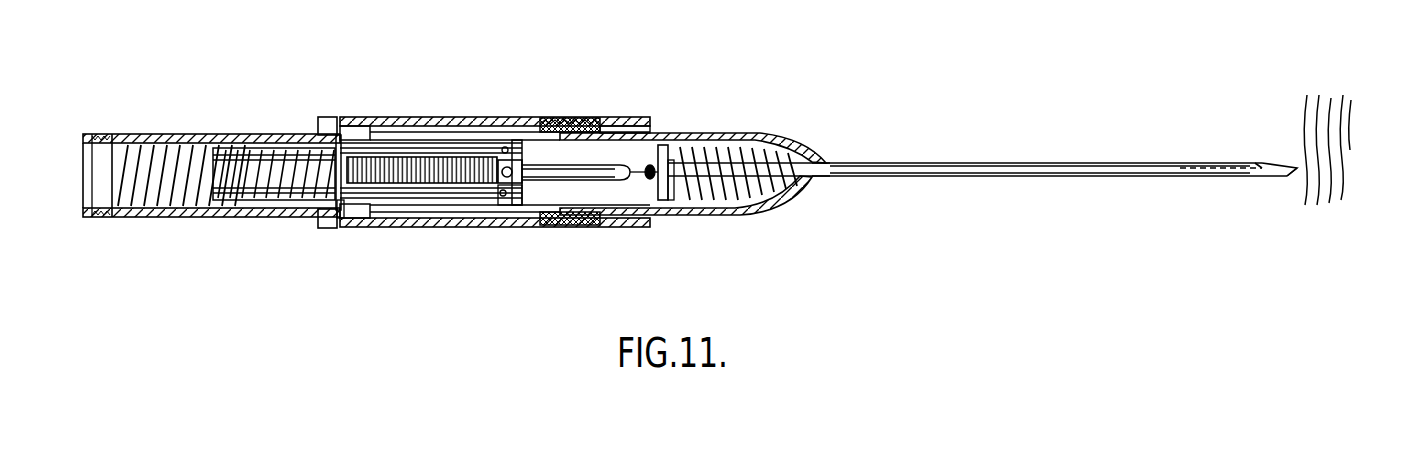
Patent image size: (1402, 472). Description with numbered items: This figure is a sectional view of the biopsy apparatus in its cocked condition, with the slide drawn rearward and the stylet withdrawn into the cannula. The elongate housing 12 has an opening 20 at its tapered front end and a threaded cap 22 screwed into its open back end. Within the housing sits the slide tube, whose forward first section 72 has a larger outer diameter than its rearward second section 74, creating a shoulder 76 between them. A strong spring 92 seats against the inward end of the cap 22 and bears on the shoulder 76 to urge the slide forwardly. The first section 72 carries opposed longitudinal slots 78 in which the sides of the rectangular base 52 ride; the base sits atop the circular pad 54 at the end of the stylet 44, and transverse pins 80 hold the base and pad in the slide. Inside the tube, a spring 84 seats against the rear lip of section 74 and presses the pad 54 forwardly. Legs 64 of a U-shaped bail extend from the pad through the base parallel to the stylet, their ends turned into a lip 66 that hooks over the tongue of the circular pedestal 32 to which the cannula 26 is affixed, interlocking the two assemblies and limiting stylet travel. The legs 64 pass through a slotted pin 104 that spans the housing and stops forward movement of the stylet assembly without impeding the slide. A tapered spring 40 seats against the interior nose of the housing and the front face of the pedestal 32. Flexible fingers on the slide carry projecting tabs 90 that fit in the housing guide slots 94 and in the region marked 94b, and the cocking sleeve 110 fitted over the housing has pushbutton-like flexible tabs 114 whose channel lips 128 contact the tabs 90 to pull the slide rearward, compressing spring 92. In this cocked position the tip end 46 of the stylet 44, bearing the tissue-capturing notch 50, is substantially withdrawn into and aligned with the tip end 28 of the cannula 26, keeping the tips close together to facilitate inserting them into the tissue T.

The housing 12 is at (168, 131).
The threaded cap 22 is at (85, 153).
The spring 92 is at (152, 198).
The second section 74 is at (285, 200).
The shoulder 76 is at (333, 160).
The spring 84 is at (320, 217).
The flexible tabs 114 is at (352, 117).
The lip 128 is at (443, 135).
The tab 90 is at (383, 127).
The first section 72 is at (448, 203).
The pad 54 is at (483, 180).
The pins 80 is at (505, 150).
The base 52 is at (517, 190).
The longitudinal slots 78 is at (518, 147).
The legs 64 is at (588, 173).
The guide slots 94 is at (443, 130).
The sleeve 110 is at (572, 113).
The threaded ring 94b is at (577, 157).
The slotted pin 104 is at (650, 168).
The circular pedestal 32 is at (662, 160).
The lip 66 is at (670, 193).
The spring 40 is at (743, 157).
The opening 20 is at (817, 163).
The cannula 26 is at (1062, 177).
The notch 50 is at (1203, 153).
The tip end 28 is at (1263, 163).
The tip end 46 is at (1293, 167).
The stylet 44 is at (1268, 177).
The tissue T is at (1310, 110).